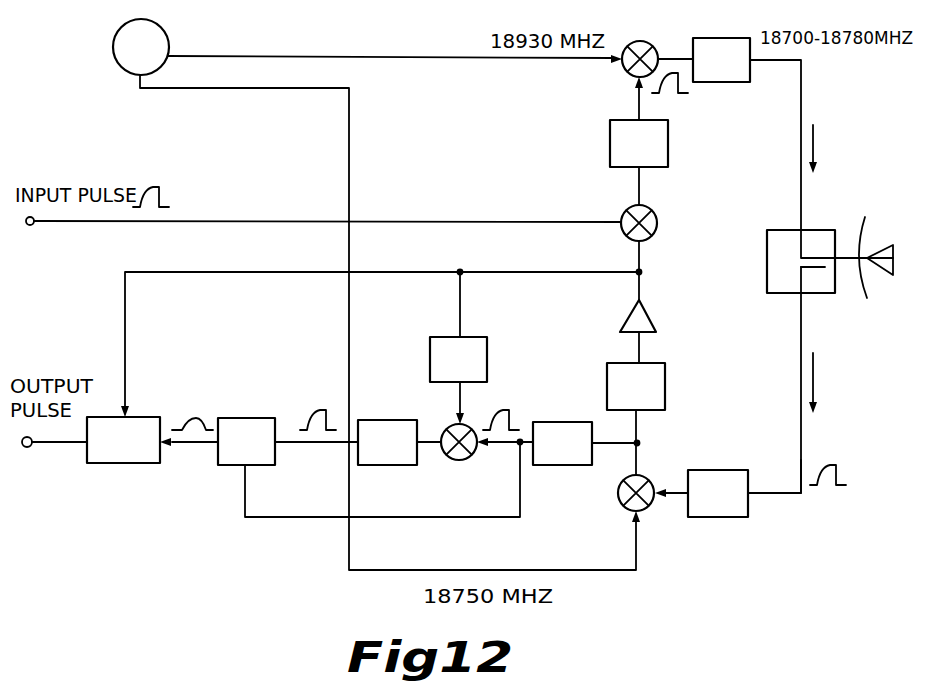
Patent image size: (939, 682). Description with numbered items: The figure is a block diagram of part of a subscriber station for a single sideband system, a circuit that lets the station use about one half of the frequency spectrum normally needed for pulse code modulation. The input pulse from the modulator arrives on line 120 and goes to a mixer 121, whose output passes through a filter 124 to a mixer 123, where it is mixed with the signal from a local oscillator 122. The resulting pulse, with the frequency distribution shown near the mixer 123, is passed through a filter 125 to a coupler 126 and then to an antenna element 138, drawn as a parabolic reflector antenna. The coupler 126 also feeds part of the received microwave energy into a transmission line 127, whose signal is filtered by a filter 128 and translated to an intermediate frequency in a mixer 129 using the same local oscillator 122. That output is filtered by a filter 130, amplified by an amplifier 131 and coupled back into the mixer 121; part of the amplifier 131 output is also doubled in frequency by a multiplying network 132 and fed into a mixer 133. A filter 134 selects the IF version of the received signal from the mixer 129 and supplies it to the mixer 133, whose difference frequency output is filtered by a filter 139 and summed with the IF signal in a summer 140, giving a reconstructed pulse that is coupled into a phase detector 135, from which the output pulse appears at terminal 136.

The line 120 is at (127, 224).
The mixer 121 is at (657, 222).
The local oscillator 122 is at (167, 32).
The mixer 123 is at (655, 24).
The filter 124 is at (668, 143).
The filter 125 is at (720, 13).
The coupler 126 is at (825, 293).
The transmission line 127 is at (801, 492).
The filter 128 is at (727, 468).
The mixer 129 is at (650, 510).
The filter 130 is at (665, 388).
The amplifier 131 is at (652, 318).
The multiplying network 132 is at (488, 347).
The mixer 133 is at (467, 427).
The filter 134 is at (567, 422).
The phase detector 135 is at (148, 463).
The output pulse terminal 136 is at (58, 443).
The antenna element 138 is at (860, 208).
The filter 139 is at (388, 418).
The summer 140 is at (249, 418).